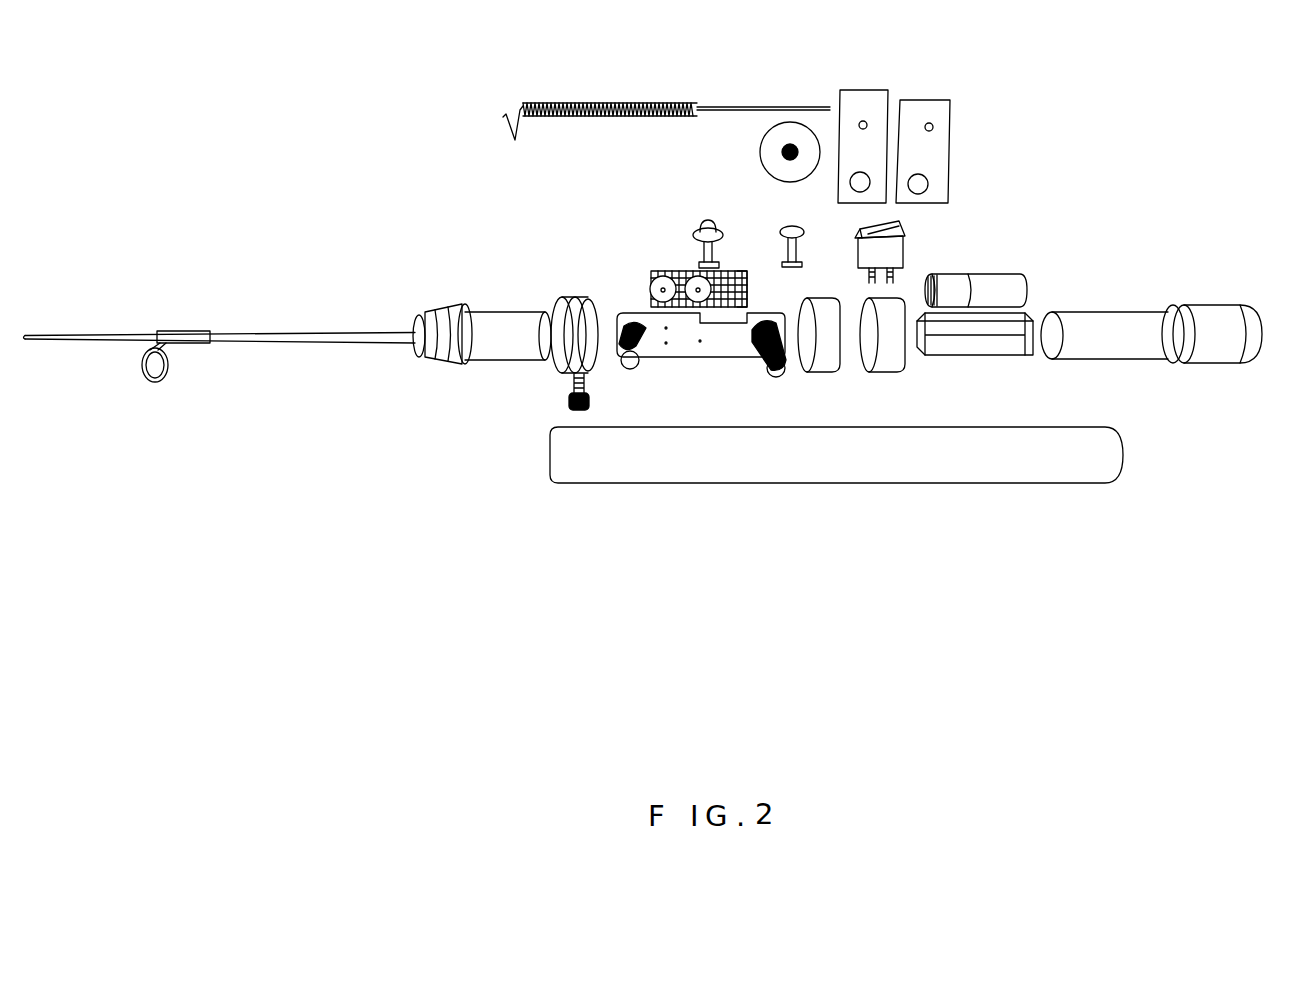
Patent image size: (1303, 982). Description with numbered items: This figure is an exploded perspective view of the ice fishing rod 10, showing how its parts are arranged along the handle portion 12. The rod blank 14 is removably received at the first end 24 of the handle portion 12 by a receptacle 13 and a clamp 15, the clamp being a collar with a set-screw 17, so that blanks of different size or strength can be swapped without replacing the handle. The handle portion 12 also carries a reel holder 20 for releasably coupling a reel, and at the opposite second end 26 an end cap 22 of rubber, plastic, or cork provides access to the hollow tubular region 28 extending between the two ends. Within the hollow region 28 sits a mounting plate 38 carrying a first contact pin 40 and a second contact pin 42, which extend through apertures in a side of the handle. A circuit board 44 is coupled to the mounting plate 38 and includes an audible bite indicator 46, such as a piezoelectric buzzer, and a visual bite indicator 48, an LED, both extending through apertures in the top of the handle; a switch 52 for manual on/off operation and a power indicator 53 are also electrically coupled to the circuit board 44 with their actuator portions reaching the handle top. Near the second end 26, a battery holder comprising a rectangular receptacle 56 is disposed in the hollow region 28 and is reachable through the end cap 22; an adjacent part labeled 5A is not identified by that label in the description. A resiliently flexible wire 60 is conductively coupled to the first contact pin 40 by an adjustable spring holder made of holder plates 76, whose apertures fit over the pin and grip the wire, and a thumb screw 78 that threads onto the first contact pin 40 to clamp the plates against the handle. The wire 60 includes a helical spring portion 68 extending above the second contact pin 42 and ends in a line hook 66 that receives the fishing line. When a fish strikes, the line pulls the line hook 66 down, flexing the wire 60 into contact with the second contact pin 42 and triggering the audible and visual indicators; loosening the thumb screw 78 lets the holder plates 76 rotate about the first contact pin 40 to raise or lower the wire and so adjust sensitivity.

The ice fishing rod 10 is at (318, 692).
The handle portion 12 is at (570, 528).
The receptacle 13 is at (403, 353).
The rod blank 14 is at (300, 343).
The clamp 15 is at (498, 362).
The set-screw 17 is at (569, 402).
The reel holder 20 is at (877, 373).
The end cap 22 is at (1230, 356).
The first end 24 is at (367, 273).
The second end 26 is at (1213, 275).
The tubular region 28 is at (896, 484).
The mounting plate 38 is at (722, 343).
The first contact pin 40 is at (766, 376).
The second contact pin 42 is at (628, 366).
The circuit board 44 is at (748, 290).
The audible bite indicator 46 is at (652, 282).
The visual bite indicator 48 is at (700, 221).
The switch 52 is at (892, 253).
The power indicator 53 is at (790, 227).
The rectangular receptacle 56 is at (1112, 352).
The half pipe channel 5A is at (970, 351).
The resiliently flexible wire 60 is at (740, 106).
The line hook 66 is at (500, 130).
The spring portion 68 is at (630, 104).
The holder plates 76 is at (860, 100).
The thumb screw 78 is at (775, 164).